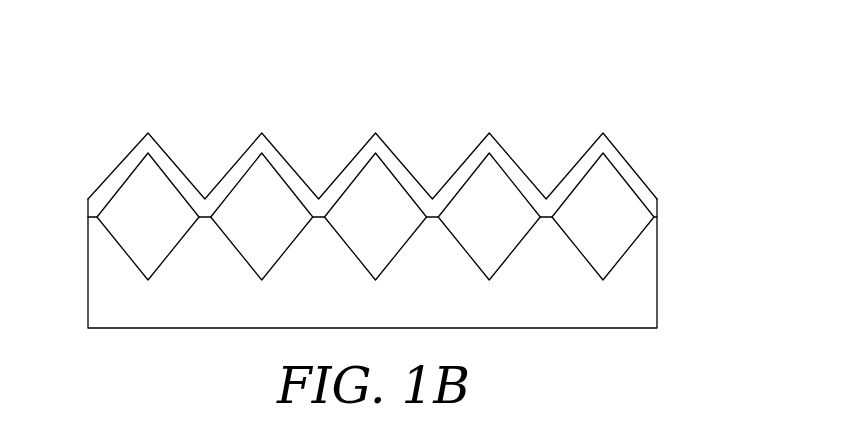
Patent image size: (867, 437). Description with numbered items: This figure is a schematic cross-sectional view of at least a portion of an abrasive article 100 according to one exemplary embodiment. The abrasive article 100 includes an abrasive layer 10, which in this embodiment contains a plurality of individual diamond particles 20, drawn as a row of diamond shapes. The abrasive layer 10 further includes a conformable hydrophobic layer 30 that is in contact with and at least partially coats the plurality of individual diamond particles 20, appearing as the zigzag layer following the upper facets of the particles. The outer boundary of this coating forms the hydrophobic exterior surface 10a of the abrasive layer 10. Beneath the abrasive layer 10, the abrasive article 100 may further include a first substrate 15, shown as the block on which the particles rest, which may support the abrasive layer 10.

The abrasive article 100 is at (190, 79).
The abrasive layer 10 is at (683, 206).
The hydrophobic exterior surface 10a is at (617, 152).
The first substrate 15 is at (657, 268).
The individual diamond particles 20 is at (608, 202).
The conformable hydrophobic layer 30 is at (120, 180).